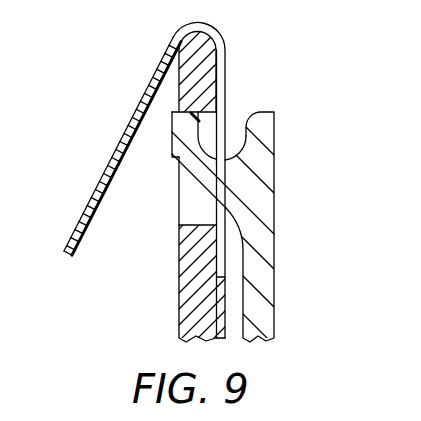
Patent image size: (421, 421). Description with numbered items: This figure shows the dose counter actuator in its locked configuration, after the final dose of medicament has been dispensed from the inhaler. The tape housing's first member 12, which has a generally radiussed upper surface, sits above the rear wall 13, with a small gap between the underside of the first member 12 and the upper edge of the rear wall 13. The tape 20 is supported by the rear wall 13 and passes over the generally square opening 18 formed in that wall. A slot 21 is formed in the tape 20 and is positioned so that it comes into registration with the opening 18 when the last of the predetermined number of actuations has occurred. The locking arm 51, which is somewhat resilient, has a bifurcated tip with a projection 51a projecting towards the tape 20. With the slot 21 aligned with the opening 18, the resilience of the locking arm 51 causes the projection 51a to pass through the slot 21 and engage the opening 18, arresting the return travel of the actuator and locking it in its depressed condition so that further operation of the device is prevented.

The first member 12 is at (179, 80).
The rear wall 13 is at (179, 268).
The opening 18 is at (186, 202).
The tape 20 is at (103, 172).
The slot 21 is at (226, 88).
The locking arm 51 is at (274, 263).
The projection 51a is at (173, 130).